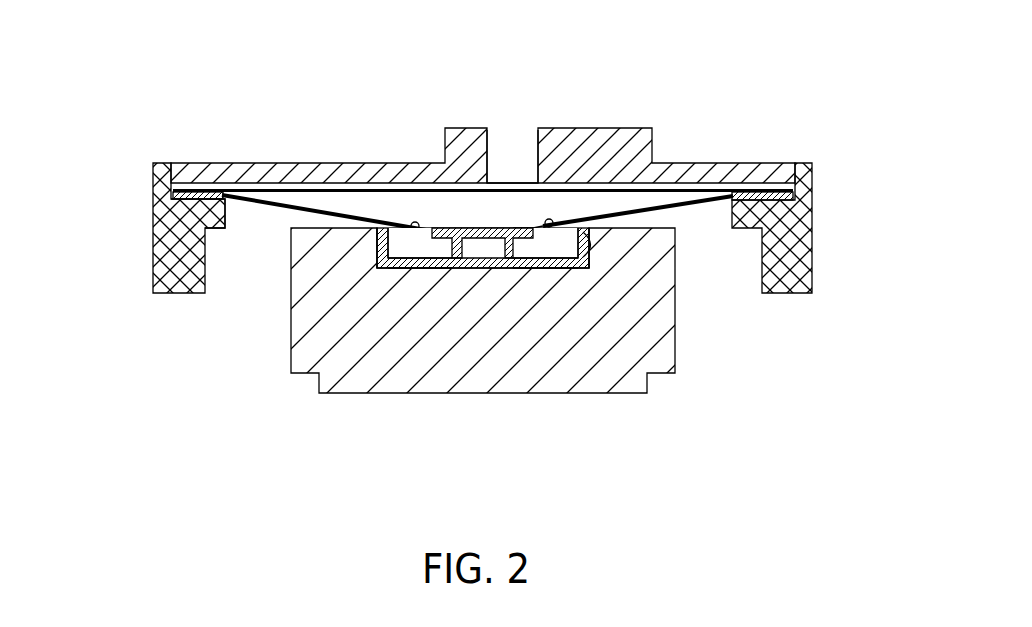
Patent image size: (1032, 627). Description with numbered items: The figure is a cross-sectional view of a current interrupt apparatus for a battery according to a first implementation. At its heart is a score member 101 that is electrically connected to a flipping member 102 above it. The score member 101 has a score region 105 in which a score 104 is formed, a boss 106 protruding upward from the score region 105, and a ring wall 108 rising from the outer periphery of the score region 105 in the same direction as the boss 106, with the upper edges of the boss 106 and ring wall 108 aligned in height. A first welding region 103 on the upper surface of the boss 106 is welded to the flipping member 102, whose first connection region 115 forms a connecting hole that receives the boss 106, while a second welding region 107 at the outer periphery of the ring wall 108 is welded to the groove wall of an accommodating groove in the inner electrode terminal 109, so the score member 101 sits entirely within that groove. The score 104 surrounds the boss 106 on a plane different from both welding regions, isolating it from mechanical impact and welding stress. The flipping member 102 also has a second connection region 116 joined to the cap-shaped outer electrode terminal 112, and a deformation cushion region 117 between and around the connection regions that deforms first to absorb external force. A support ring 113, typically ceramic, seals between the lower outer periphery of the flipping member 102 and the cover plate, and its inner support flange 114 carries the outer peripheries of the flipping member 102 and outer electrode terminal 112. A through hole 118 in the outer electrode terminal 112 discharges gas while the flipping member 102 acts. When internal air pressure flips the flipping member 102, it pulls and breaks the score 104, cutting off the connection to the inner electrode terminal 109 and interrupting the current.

The score member 101 is at (609, 269).
The flipping member 102 is at (300, 197).
The first welding region 103 is at (531, 215).
The score 104 is at (407, 283).
The score region 105 is at (539, 289).
The boss 106 is at (467, 257).
The second welding region 107 is at (356, 244).
The ring wall 108 is at (361, 260).
The inner electrode terminal 109 is at (490, 379).
The outer electrode terminal 112 is at (453, 136).
The support ring 113 is at (160, 248).
The support flange 114 is at (203, 201).
The first connection region 115 is at (535, 244).
The second connection region 116 is at (749, 181).
The deformation cushion region 117 is at (403, 205).
The through hole 118 is at (521, 140).